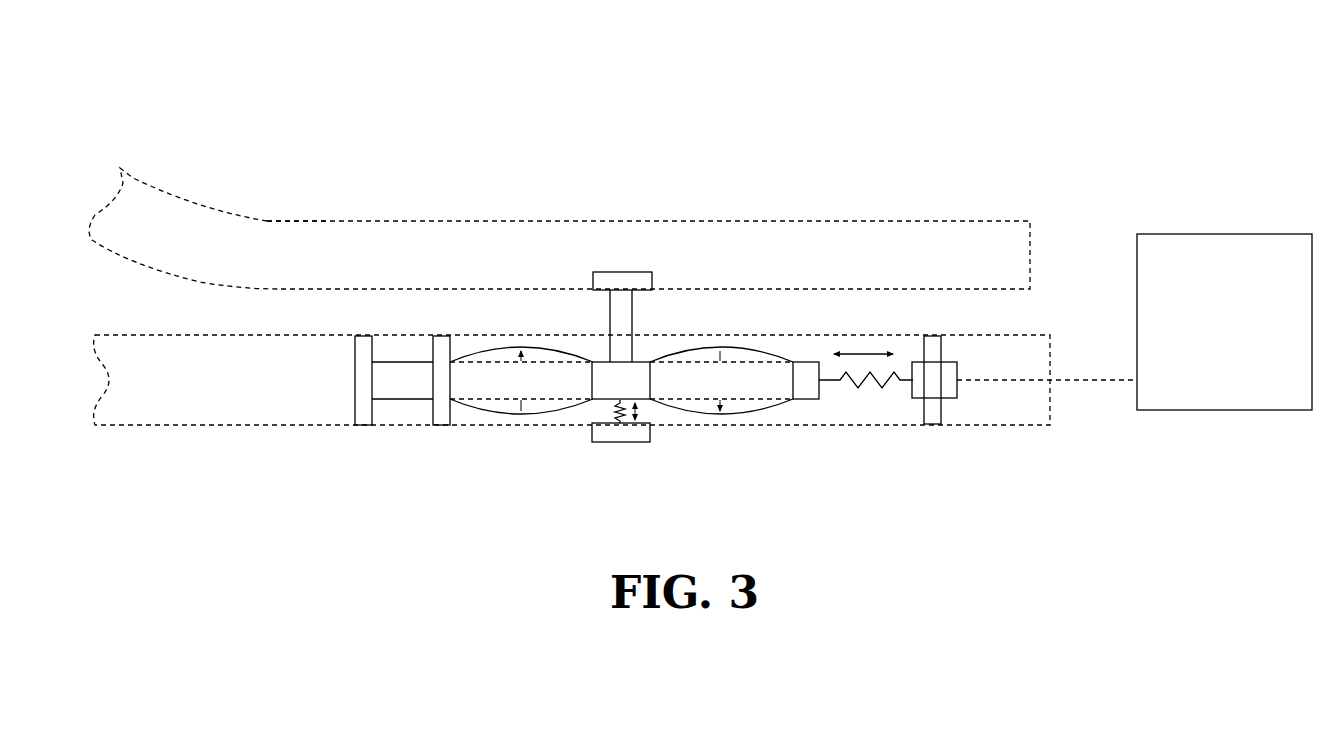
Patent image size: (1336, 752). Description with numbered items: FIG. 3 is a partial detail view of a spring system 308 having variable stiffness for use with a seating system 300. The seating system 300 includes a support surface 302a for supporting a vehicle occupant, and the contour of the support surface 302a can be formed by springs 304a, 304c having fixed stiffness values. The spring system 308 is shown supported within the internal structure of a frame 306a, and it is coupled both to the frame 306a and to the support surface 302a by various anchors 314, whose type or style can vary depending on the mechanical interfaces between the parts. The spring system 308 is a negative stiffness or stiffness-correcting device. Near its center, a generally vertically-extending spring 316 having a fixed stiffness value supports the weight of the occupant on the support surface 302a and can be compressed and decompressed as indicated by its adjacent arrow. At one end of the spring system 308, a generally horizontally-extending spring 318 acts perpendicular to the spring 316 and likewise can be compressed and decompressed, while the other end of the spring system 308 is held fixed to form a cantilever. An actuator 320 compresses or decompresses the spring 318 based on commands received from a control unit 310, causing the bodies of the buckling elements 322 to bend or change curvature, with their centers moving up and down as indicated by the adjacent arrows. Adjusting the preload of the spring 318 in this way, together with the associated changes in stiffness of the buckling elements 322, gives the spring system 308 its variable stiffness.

The seating system 300 is at (886, 144).
The support surface 302a is at (270, 214).
The spring 304a is at (130, 178).
The spring 304c is at (435, 220).
The frame 306a is at (220, 428).
The spring system 308 is at (589, 250).
The control unit 310 is at (1225, 234).
The anchors 314 is at (618, 272).
The spring 316 is at (617, 412).
The spring 318 is at (873, 383).
The actuator 320 is at (957, 388).
The buckling elements 322 is at (550, 350).